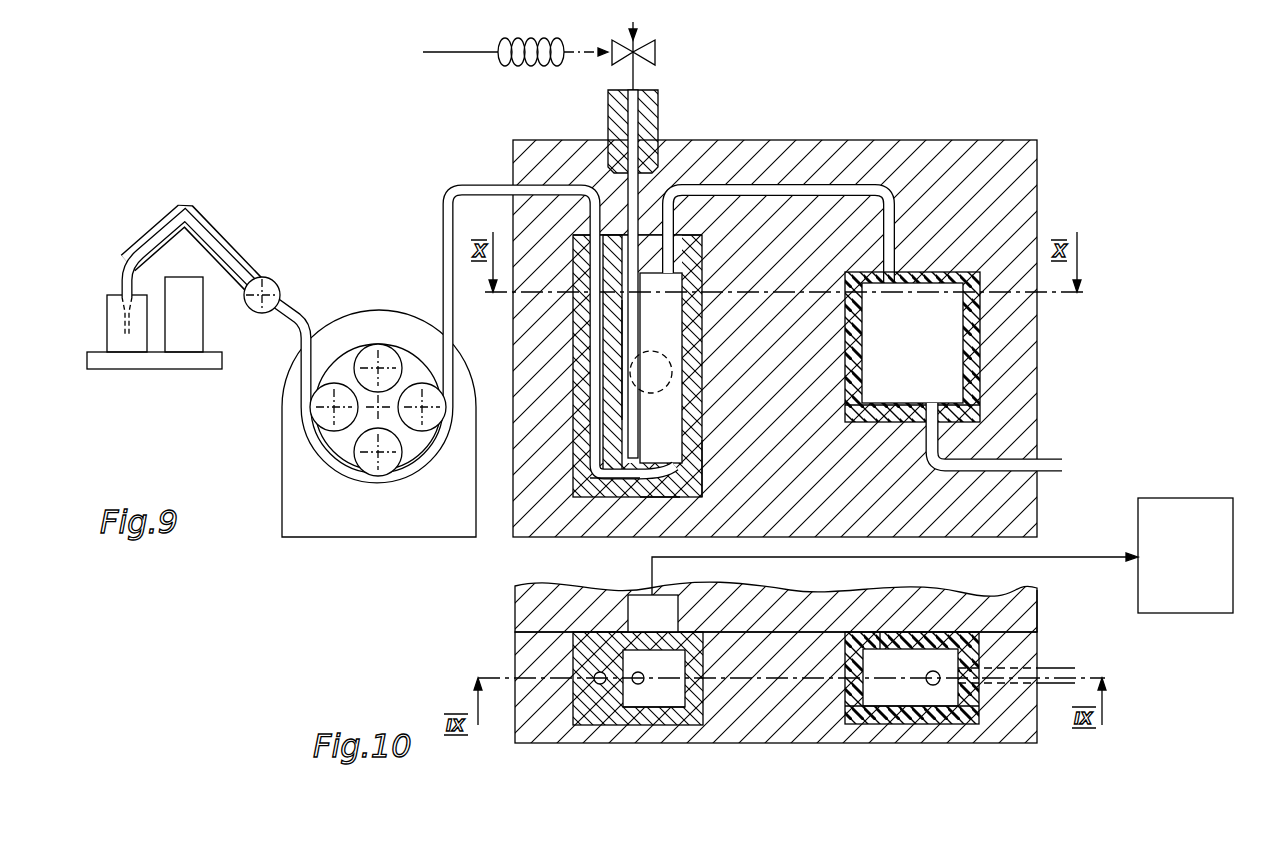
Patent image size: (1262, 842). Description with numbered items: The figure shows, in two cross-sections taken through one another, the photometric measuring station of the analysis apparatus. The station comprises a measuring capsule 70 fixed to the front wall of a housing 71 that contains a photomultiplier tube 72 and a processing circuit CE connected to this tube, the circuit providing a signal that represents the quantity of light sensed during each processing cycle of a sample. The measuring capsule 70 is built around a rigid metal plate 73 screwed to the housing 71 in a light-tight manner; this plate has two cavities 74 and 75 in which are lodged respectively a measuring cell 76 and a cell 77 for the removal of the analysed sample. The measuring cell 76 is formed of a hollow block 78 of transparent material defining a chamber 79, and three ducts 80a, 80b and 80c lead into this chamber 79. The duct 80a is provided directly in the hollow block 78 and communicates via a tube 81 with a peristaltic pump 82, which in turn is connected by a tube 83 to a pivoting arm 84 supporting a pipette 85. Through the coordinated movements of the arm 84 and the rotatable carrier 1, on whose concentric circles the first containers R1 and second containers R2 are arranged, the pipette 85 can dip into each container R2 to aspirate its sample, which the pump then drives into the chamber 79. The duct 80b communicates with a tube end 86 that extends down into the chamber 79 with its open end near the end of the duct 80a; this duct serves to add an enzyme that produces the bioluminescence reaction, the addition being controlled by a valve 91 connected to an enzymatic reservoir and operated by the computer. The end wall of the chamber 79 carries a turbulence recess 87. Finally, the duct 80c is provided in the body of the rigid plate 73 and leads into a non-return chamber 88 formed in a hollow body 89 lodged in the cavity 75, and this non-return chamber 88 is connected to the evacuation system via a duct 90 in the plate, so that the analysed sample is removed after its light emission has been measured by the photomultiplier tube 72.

In FIG. 9, the plate or carrier 1 is at (215, 360).
In FIG. 9, the first containers R1 is at (200, 325).
In FIG. 9, the second containers R2 is at (110, 330).
In FIG. 10, the measuring capsule 70 is at (980, 745).
In FIG. 10, the housing 71 is at (1037, 600).
In FIG. 9, the photomultiplier tube 72 is at (672, 372).
In FIG. 10, the photomultiplier tube 72 is at (665, 600).
In FIG. 9, the rigid metal plate 73 is at (928, 150).
In FIG. 10, the rigid metal plate 73 is at (748, 710).
In FIG. 9, the cavity 74 is at (648, 497).
In FIG. 10, the cavity 74 is at (648, 707).
In FIG. 9, the cavity 75 is at (975, 403).
In FIG. 10, the cavity 75 is at (920, 722).
In FIG. 9, the measuring cell 76 is at (714, 472).
In FIG. 9, the cell for the removal of the analysed sample 77 is at (983, 347).
In FIG. 10, the cell for the removal of the analysed sample 77 is at (944, 670).
In FIG. 9, the hollow block 78 is at (578, 460).
In FIG. 10, the hollow block 78 is at (558, 658).
In FIG. 9, the chamber 79 is at (675, 430).
In FIG. 9, the duct 80a is at (600, 350).
In FIG. 10, the duct 80a is at (572, 720).
In FIG. 9, the duct 80b is at (635, 205).
In FIG. 9, the duct 80c is at (670, 225).
In FIG. 9, the tube 81 is at (463, 183).
In FIG. 9, the peristaltic pump 82 is at (300, 512).
In FIG. 9, the tube 83 is at (292, 303).
In FIG. 9, the pivoting arm 84 is at (218, 253).
In FIG. 9, the pipette 85 is at (122, 285).
In FIG. 9, the tube end 86 is at (636, 428).
In FIG. 10, the tube end 86 is at (640, 684).
In FIG. 9, the turbulence recess 87 is at (612, 480).
In FIG. 9, the non-return chamber 88 is at (928, 340).
In FIG. 10, the non-return chamber 88 is at (880, 693).
In FIG. 9, the hollow body 89 is at (880, 408).
In FIG. 10, the hollow body 89 is at (893, 632).
In FIG. 9, the duct 90 is at (1065, 462).
In FIG. 10, the duct 90 is at (1055, 670).
In FIG. 9, the valve 91 is at (613, 73).
In FIG. 10, the processing circuit CE is at (1185, 613).